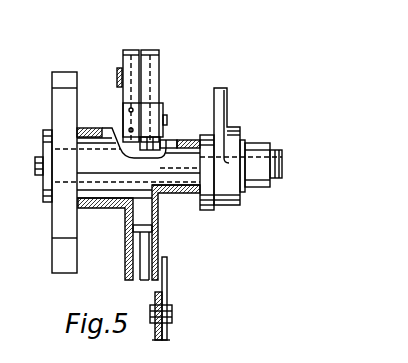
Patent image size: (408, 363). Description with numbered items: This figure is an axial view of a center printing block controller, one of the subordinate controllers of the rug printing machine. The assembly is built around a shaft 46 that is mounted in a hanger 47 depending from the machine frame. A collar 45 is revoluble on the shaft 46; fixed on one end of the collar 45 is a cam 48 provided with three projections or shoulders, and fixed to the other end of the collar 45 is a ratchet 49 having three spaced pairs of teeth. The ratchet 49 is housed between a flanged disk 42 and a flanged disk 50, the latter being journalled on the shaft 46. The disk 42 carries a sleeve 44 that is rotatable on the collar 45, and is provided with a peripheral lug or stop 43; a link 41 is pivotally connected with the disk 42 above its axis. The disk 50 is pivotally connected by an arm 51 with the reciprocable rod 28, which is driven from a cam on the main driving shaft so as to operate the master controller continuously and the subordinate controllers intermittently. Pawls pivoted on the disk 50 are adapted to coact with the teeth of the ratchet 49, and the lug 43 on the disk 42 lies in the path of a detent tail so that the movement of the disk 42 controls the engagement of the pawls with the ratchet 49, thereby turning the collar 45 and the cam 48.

The reciprocable rod 28 is at (168, 336).
The link 41 is at (117, 74).
The disk 42 is at (129, 50).
The peripheral lug or stop 43 is at (146, 112).
The sleeve 44 is at (82, 128).
The collar 45 is at (105, 200).
The shaft 46 is at (190, 178).
The hanger 47 is at (222, 88).
The cam 48 is at (55, 240).
The ratchet 49 is at (153, 225).
The flanged disk 50 is at (152, 52).
The arm 51 is at (167, 278).